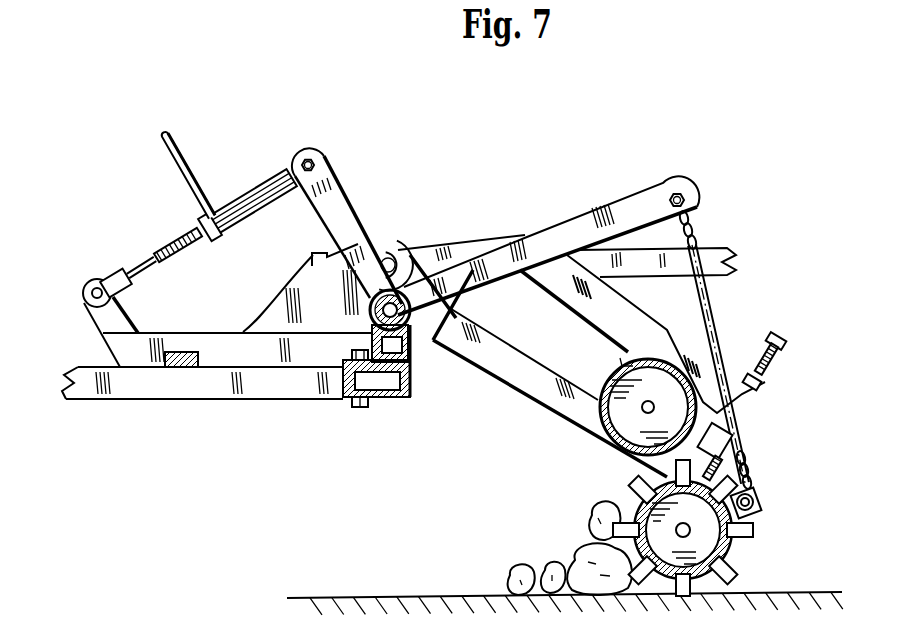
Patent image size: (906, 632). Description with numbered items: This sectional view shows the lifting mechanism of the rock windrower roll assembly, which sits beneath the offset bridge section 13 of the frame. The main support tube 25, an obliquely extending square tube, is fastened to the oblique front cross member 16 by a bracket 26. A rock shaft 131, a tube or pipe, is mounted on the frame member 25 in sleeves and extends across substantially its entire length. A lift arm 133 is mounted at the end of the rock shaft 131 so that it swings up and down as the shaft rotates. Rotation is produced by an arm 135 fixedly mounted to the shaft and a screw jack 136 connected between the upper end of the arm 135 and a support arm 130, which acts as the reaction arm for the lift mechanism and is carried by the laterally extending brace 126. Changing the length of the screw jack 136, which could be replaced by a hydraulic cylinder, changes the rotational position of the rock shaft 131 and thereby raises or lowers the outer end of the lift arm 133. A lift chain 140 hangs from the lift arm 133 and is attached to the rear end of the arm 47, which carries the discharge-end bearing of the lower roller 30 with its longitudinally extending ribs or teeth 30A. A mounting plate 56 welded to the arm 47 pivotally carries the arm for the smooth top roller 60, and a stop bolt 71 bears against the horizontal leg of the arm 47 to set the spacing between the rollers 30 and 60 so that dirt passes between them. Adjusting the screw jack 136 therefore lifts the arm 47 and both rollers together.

The offset bridge section 13 is at (644, 262).
The front cross member 16 is at (380, 398).
The main support tube 25 is at (410, 345).
The bracket 26 is at (343, 362).
The lower roller 30 is at (735, 548).
The ribs or teeth 30A is at (755, 538).
The arm 47 is at (526, 378).
The mounting plate 56 is at (262, 318).
The top roller 60 is at (616, 372).
The stop bolt 71 is at (771, 366).
The brace 126 is at (185, 350).
The support arm 130 is at (250, 347).
The rock shaft 131 is at (423, 262).
The lift arm 133 is at (585, 226).
The arm 135 is at (333, 183).
The screw jack 136 is at (240, 197).
The lift chain 140 is at (700, 237).